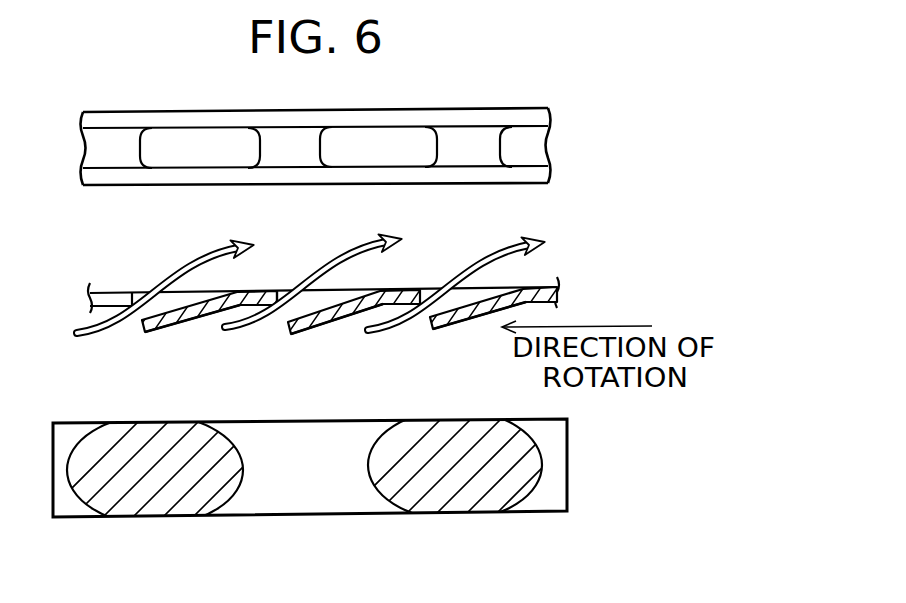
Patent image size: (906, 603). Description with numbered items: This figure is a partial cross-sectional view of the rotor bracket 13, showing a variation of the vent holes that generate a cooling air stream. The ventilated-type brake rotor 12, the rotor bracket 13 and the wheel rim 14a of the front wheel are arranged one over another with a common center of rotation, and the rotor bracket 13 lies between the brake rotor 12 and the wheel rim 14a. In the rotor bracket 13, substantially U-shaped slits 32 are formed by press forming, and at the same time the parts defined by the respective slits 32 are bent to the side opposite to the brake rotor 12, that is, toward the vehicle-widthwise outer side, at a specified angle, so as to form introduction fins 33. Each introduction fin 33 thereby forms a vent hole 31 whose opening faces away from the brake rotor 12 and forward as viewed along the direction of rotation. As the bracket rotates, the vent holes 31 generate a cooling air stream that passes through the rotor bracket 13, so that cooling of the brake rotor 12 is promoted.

The brake rotor 12 is at (527, 143).
The rotor bracket 13 is at (557, 295).
The wheel rim 14a is at (550, 457).
The vent hole 31 is at (268, 328).
The slit 32 is at (290, 292).
The introduction fin 33 is at (318, 313).